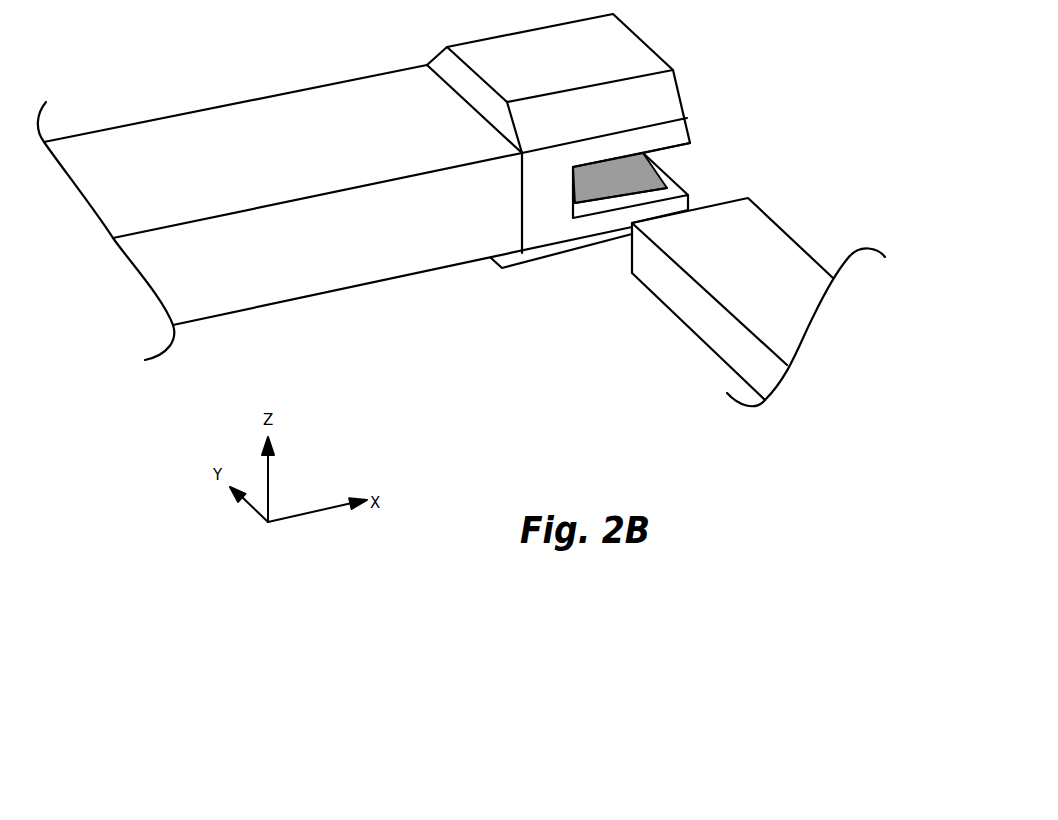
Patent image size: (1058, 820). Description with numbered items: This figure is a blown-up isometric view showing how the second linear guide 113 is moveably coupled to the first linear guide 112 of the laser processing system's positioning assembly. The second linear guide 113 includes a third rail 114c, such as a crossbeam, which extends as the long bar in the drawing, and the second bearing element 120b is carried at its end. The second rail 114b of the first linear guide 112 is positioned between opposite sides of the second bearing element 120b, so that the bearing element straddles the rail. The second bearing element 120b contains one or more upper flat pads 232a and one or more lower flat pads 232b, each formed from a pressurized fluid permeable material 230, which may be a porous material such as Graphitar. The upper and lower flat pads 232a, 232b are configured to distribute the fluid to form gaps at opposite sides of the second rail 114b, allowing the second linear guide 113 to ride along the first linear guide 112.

The first linear guide 112 is at (687, 332).
The second linear guide 113 is at (275, 97).
The second rail 114b is at (782, 237).
The third rail 114c is at (382, 250).
The second bearing element 120b is at (668, 97).
The pressurized fluid permeable material 230 is at (638, 185).
The upper flat pad 232a is at (650, 170).
The lower flat pad 232b is at (618, 178).